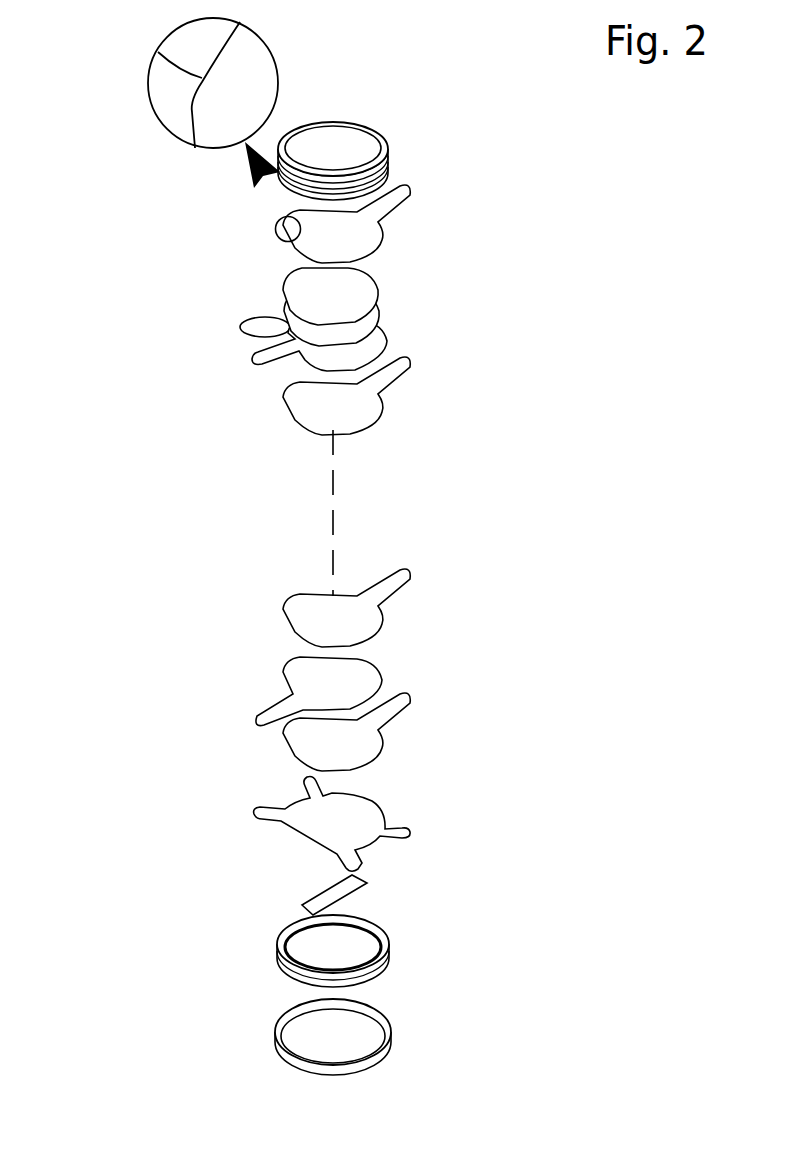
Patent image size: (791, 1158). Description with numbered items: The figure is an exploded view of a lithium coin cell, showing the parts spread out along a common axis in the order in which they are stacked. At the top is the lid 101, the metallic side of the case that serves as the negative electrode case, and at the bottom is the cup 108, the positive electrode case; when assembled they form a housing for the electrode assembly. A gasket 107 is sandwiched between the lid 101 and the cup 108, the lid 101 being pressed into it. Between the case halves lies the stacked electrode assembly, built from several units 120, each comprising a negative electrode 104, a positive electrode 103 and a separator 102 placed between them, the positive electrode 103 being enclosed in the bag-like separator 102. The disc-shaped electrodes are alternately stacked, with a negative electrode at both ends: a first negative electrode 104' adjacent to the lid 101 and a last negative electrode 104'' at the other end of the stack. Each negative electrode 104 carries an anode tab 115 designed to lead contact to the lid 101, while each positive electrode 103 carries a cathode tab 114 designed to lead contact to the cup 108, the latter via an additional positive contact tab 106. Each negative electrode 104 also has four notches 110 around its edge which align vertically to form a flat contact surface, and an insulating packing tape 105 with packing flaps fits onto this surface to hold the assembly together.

The lid 101 is at (386, 172).
The separator 102 is at (362, 293).
The positive electrode 103 is at (297, 681).
The negative electrode 104 is at (448, 502).
The first negative electrode 104' is at (452, 237).
The last negative electrode 104'' is at (474, 725).
The insulating packing tape 105 is at (370, 807).
The additional positive contact tab 106 is at (302, 905).
The gasket 107 is at (277, 953).
The cup 108 is at (276, 1035).
The notch 110 is at (158, 52).
The cathode tab 114 is at (265, 718).
The anode tab 115 is at (400, 198).
The unit 120 is at (285, 207).